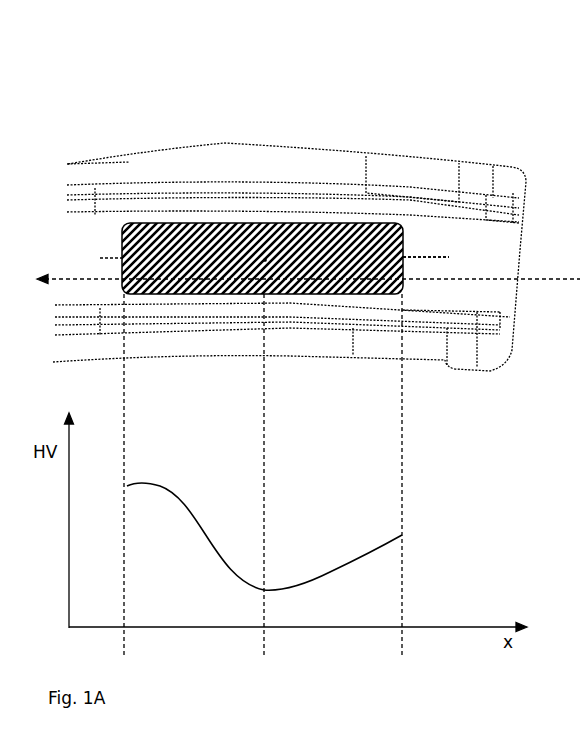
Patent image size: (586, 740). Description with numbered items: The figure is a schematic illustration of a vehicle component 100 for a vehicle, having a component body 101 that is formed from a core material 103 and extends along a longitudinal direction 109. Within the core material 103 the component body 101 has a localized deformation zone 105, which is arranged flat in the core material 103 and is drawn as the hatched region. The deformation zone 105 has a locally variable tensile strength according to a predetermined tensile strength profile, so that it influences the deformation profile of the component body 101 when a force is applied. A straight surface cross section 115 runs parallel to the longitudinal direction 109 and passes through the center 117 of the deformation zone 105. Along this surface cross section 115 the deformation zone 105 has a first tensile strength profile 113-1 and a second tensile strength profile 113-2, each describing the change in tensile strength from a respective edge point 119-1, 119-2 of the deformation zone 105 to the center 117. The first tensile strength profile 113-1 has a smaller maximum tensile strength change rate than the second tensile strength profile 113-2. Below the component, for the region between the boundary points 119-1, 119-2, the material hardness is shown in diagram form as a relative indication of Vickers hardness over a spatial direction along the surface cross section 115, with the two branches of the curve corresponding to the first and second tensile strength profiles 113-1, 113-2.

The vehicle component 100 is at (162, 78).
The component body 101 is at (128, 162).
The core material 103 is at (419, 169).
The localized deformation zone 105 is at (353, 232).
The longitudinal direction 109 is at (308, 269).
The first tensile strength profile 113-1 is at (160, 485).
The second tensile strength profile 113-2 is at (293, 587).
The surface cross section 115 is at (450, 262).
The center of the deformation zone 117 is at (265, 260).
The first edge point 119-1 is at (122, 258).
The second edge point 119-2 is at (403, 257).